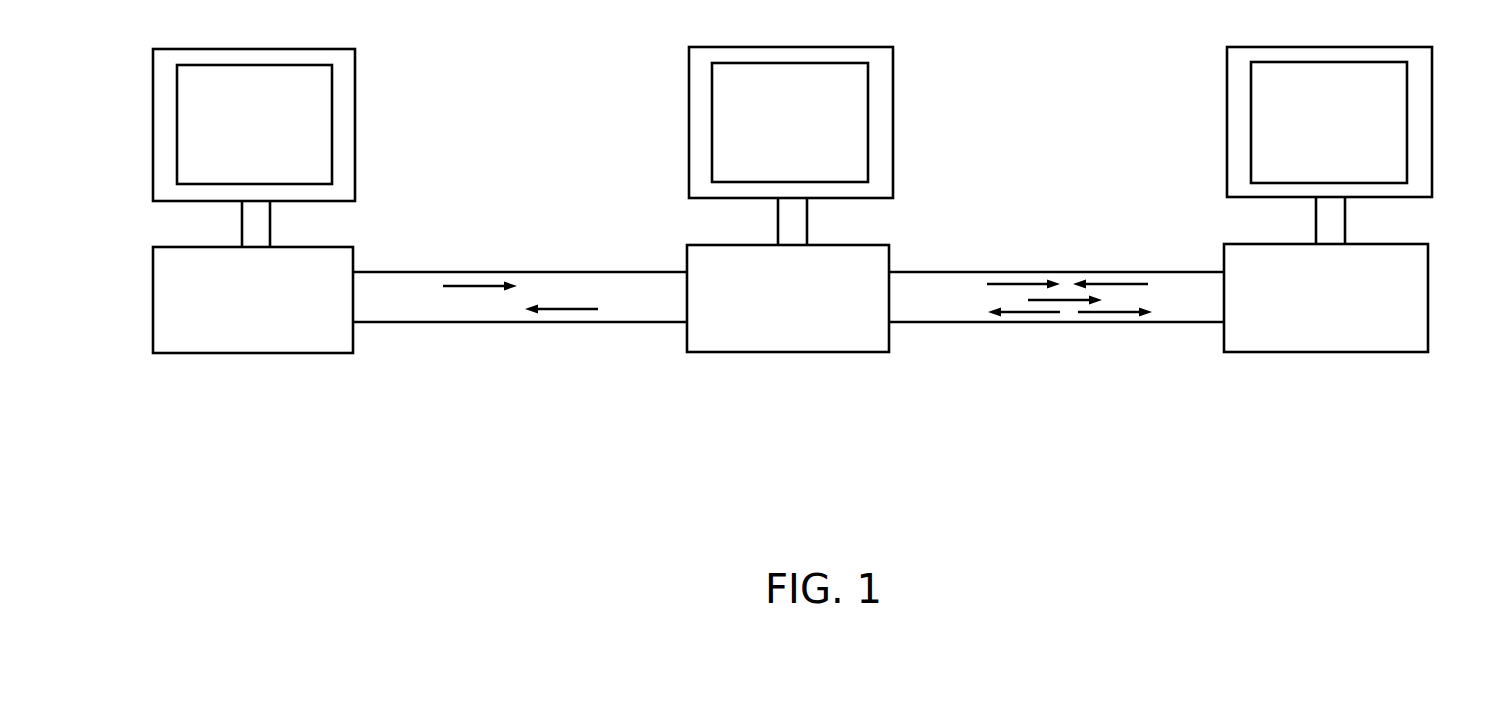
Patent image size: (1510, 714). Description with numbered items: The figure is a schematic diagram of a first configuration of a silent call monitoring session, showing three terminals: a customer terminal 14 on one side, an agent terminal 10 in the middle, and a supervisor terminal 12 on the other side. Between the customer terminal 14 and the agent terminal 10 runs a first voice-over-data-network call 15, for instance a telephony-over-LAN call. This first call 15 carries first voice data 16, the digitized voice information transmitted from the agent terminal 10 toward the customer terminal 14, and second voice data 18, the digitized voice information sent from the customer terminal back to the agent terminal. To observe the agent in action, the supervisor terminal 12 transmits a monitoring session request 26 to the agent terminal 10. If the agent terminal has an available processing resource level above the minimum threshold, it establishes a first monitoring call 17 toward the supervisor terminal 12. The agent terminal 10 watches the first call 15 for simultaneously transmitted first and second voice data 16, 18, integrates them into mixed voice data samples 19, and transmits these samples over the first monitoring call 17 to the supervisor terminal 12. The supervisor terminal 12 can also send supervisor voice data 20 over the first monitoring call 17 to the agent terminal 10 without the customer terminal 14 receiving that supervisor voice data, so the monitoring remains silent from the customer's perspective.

The agent terminal 10 is at (889, 245).
The supervisor terminal 12 is at (1428, 244).
The customer terminal 14 is at (353, 247).
The first voice-over-data-network call 15 is at (577, 272).
The first voice data 16 is at (570, 311).
The first monitoring call 17 is at (950, 322).
The second voice data 18 is at (469, 285).
The mixed voice data samples 19 is at (1070, 302).
The supervisor voice data 20 is at (1123, 283).
The monitoring session request 26 is at (1033, 310).